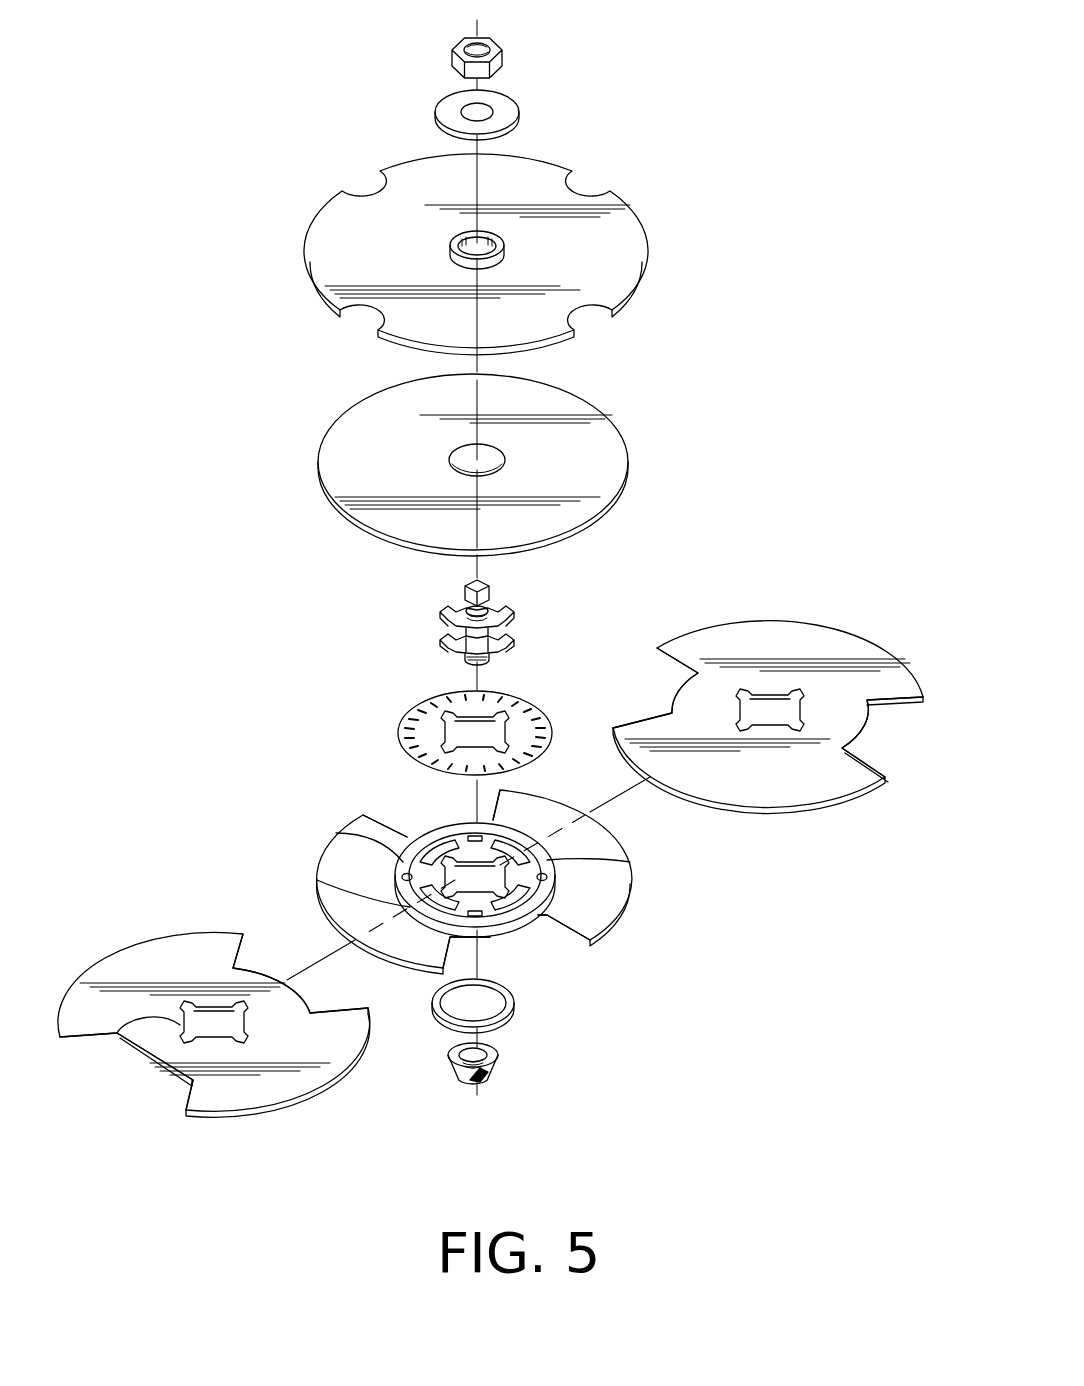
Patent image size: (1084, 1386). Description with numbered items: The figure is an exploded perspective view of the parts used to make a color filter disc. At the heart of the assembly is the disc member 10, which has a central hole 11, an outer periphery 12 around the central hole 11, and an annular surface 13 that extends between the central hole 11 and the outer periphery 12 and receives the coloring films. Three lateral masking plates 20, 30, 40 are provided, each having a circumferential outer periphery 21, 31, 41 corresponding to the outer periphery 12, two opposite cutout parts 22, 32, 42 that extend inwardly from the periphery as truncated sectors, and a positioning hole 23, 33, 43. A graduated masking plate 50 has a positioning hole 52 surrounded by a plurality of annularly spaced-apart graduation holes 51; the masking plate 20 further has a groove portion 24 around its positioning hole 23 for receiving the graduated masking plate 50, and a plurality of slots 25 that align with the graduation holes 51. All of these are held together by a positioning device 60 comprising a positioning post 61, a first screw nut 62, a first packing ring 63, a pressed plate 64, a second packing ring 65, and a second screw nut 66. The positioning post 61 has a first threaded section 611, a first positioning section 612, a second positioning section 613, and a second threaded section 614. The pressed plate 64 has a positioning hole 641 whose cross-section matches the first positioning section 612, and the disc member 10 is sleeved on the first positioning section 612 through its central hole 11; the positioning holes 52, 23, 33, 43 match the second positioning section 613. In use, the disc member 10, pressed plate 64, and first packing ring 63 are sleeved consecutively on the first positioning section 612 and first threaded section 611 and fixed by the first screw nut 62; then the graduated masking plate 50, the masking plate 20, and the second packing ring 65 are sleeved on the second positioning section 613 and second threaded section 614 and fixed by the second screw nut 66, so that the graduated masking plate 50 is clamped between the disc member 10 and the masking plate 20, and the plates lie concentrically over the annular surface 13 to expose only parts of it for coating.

The disc member 10 is at (391, 465).
The central hole 11 is at (460, 457).
The outer periphery 12 is at (318, 458).
The annular surface 13 is at (337, 523).
The lateral masking plate 20 is at (503, 911).
The circumferential outer periphery 21 is at (622, 906).
The cutout part 22 is at (392, 808).
The positioning hole 23 is at (468, 882).
The groove portion 24 is at (405, 850).
The slots 25 is at (402, 878).
The lateral masking plate 30 is at (214, 1055).
The circumferential outer periphery 31 is at (123, 947).
The cutout part 32 is at (267, 957).
The positioning hole 33 is at (118, 1035).
The lateral masking plate 40 is at (773, 732).
The circumferential outer periphery 41 is at (782, 620).
The cutout part 42 is at (665, 693).
The positioning hole 43 is at (782, 712).
The graduated masking plate 50 is at (522, 719).
The graduation holes 51 is at (550, 746).
The positioning hole 52 is at (515, 698).
The positioning device 60 is at (593, 140).
The positioning post 61 is at (381, 627).
The first threaded section 611 is at (462, 607).
The first positioning section 612 is at (460, 640).
The second positioning section 613 is at (458, 654).
The second threaded section 614 is at (462, 653).
The first screw nut 62 is at (498, 52).
The first packing ring 63 is at (503, 98).
The pressed plate 64 is at (531, 230).
The positioning hole 641 is at (460, 248).
The second packing ring 65 is at (437, 1015).
The second screw nut 66 is at (470, 1085).